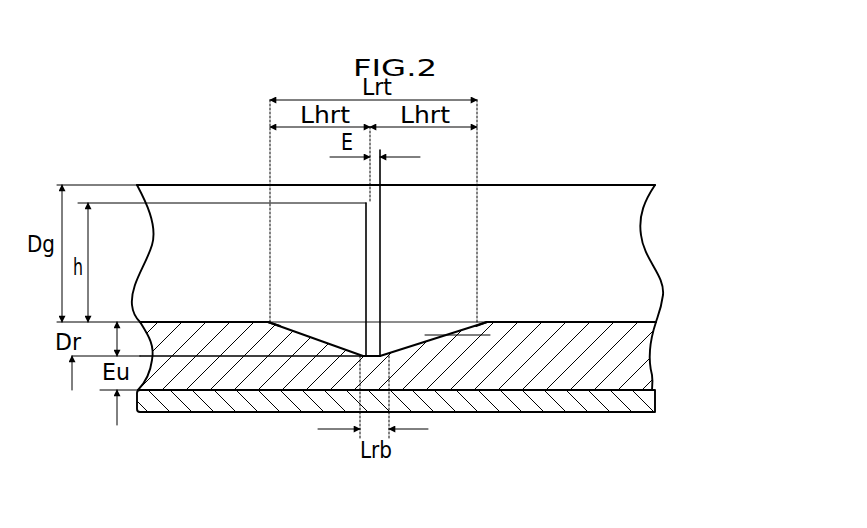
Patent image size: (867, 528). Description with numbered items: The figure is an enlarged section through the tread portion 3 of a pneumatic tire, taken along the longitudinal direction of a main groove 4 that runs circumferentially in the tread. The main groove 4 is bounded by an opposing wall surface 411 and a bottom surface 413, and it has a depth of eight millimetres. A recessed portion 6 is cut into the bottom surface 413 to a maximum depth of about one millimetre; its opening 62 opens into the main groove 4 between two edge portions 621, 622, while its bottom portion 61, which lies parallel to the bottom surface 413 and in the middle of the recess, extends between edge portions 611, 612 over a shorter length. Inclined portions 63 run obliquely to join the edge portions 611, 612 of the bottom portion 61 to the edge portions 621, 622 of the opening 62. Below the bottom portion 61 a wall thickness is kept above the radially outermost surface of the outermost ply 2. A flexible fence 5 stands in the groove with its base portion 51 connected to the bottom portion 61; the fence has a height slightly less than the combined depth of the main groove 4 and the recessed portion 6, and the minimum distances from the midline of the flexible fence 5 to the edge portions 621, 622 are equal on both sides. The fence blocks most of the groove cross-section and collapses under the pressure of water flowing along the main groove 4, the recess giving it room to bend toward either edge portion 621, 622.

The outermost ply 2 is at (512, 404).
The tread portion 3 is at (590, 182).
The main groove 4 is at (612, 253).
The wall surface 411 is at (603, 233).
The bottom surface 413 is at (623, 314).
The flexible fence 5 is at (380, 240).
The base portion 51 is at (363, 350).
The recessed portion 6 is at (425, 338).
The bottom portion 61 is at (363, 353).
The edge portion 611 is at (413, 334).
The edge portion 612 is at (362, 354).
The opening 62 is at (382, 350).
The edge portion 621 is at (483, 318).
The edge portion 622 is at (330, 347).
The inclined portion 63 is at (527, 320).